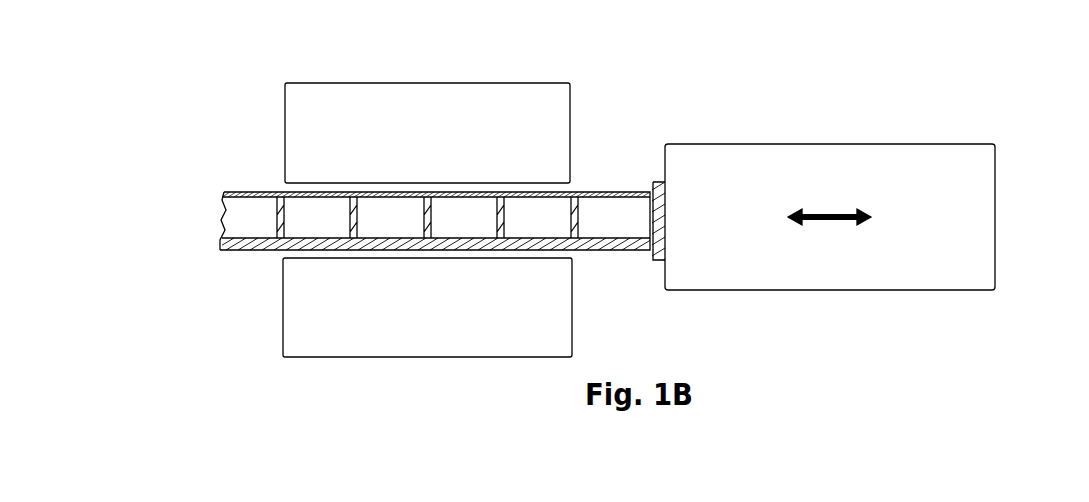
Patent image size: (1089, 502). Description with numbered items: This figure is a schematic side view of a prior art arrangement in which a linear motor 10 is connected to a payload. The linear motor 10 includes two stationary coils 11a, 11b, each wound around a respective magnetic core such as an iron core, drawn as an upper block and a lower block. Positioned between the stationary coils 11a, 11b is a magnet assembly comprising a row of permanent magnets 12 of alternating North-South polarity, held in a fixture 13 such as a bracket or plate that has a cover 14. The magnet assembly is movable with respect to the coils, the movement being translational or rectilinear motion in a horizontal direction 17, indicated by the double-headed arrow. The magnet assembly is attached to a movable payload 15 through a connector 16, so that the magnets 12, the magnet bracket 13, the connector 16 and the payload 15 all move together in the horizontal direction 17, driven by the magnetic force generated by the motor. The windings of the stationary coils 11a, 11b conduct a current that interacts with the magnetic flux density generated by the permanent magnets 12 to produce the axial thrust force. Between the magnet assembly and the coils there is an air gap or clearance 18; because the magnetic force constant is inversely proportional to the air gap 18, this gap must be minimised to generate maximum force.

The linear motor 10 is at (682, 78).
The stationary coil 11a is at (383, 99).
The stationary coil 11b is at (293, 313).
The permanent magnets 12 is at (312, 222).
The fixture 13 is at (228, 250).
The cover 14 is at (282, 192).
The movable payload 15 is at (862, 171).
The connector 16 is at (665, 260).
The horizontal direction 17 is at (828, 219).
The air gap 18 is at (530, 186).